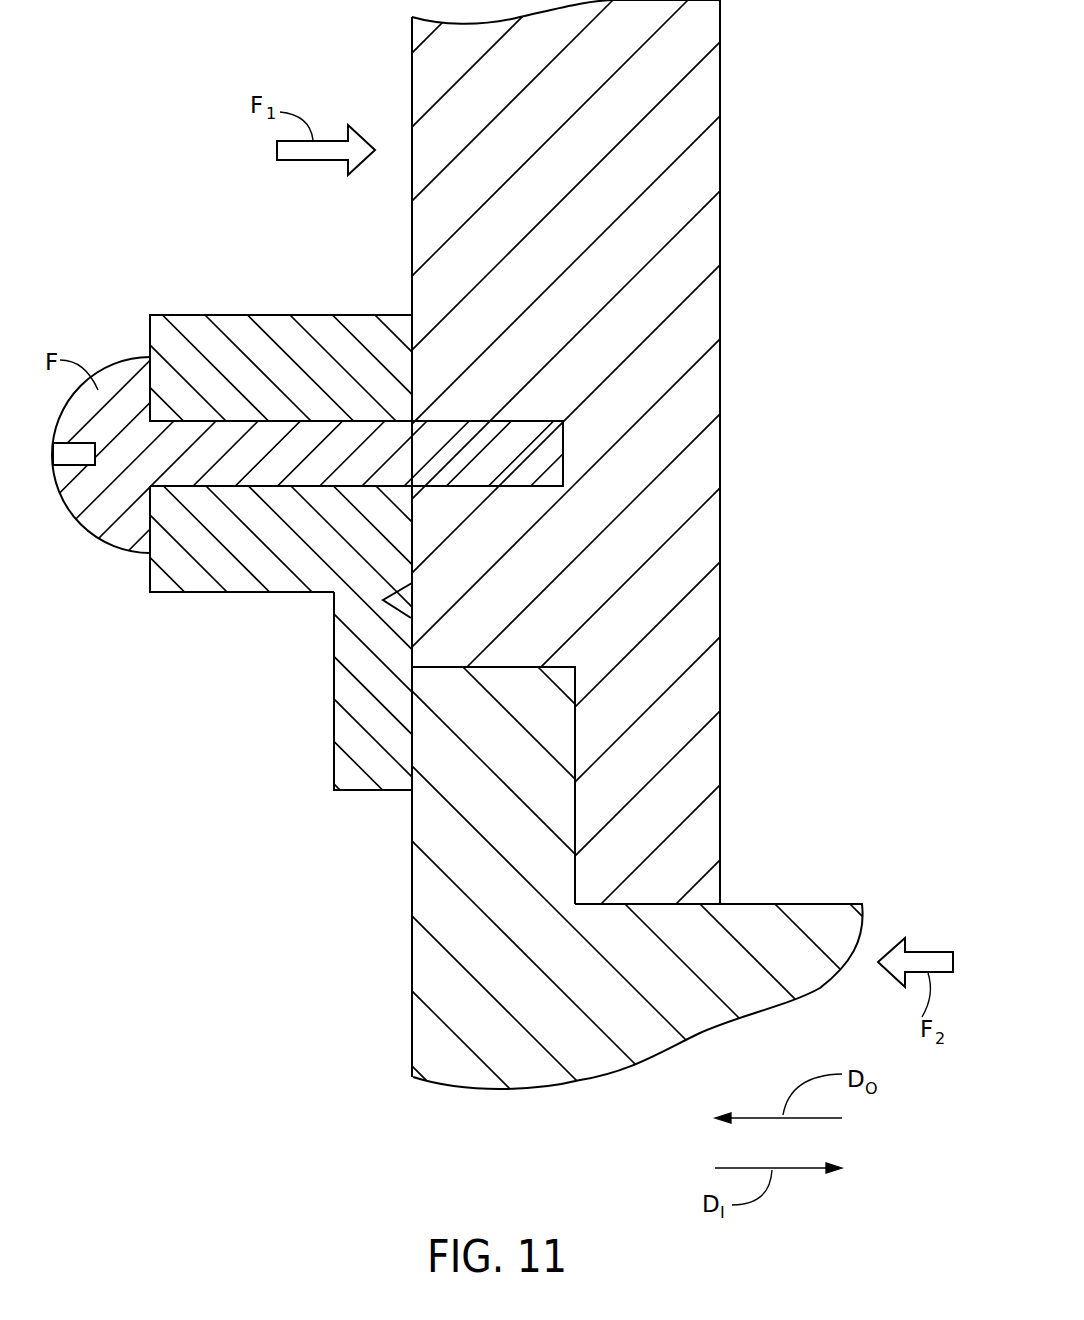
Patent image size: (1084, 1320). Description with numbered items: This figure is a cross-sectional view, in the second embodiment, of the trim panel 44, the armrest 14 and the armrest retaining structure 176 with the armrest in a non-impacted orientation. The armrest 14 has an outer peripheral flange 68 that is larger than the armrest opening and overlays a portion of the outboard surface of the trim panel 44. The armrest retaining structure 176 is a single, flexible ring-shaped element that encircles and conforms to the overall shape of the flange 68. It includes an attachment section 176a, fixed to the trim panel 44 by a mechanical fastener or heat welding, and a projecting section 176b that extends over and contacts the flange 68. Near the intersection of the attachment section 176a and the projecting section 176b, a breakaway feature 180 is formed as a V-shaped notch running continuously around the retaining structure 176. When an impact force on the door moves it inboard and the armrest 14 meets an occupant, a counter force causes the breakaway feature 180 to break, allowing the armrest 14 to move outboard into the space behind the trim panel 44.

The trim panel 44 is at (632, 97).
The armrest 14 is at (778, 948).
The outboard portion (flange) 68 is at (513, 750).
The armrest retaining structure 176 is at (260, 348).
The attachment section 176a is at (208, 547).
The projecting section 176b is at (368, 708).
The breakaway feature 180 is at (412, 597).